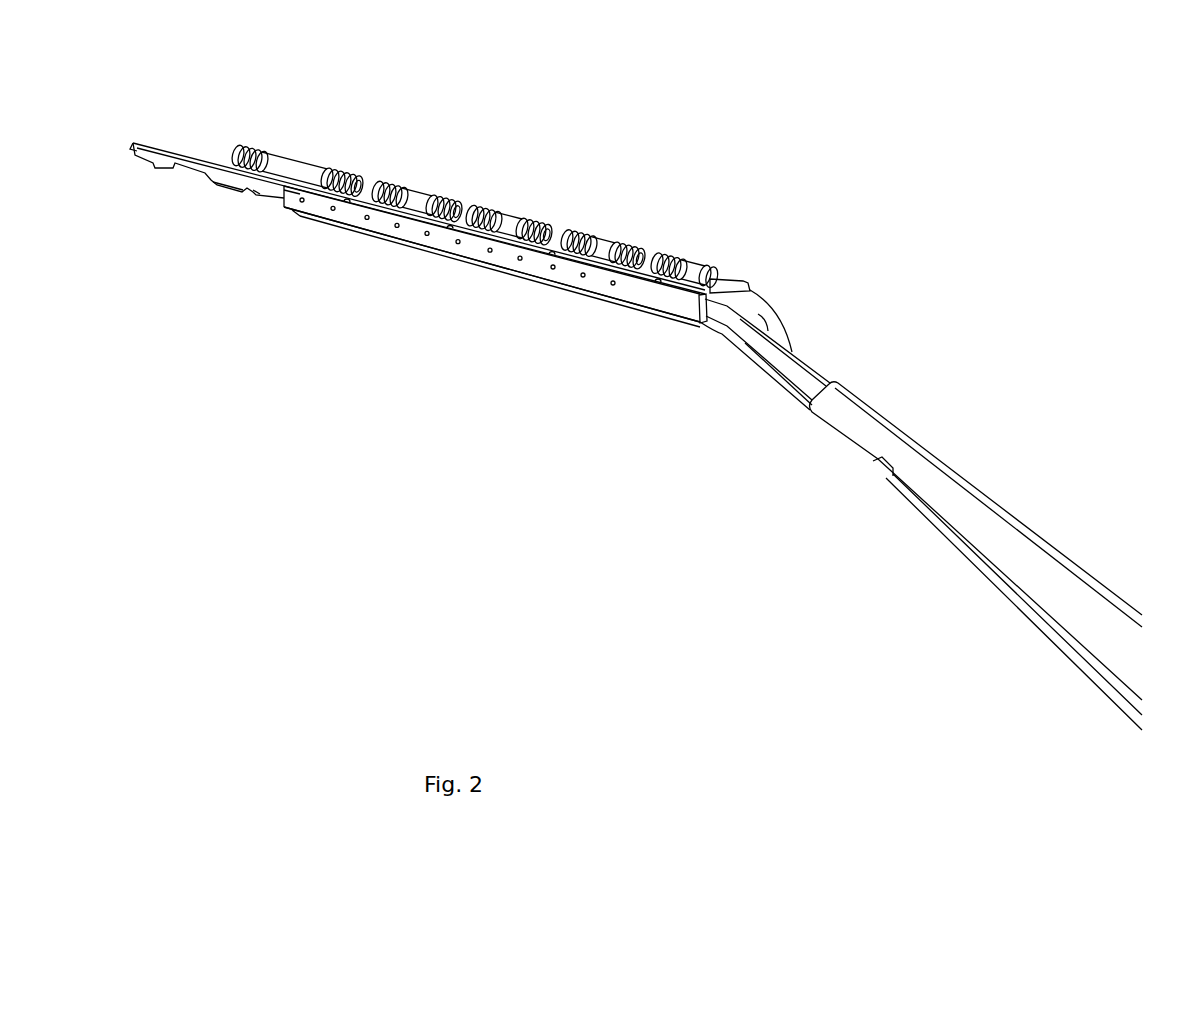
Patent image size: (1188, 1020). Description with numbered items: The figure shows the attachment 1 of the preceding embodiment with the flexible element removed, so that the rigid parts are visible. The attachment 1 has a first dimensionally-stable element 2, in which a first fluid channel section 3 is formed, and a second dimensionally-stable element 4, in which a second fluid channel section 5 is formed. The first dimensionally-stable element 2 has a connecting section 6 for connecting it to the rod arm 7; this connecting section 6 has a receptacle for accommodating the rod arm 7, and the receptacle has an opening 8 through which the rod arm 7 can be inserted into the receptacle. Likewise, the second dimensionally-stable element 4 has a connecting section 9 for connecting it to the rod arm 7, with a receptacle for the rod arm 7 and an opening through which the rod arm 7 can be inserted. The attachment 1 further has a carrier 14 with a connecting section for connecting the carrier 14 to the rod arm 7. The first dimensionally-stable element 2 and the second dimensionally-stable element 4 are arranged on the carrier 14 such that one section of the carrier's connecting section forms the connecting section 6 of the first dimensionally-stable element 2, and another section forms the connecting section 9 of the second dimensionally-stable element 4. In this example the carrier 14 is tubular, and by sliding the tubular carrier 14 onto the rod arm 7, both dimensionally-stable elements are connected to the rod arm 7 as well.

The attachment 1 is at (538, 74).
The first dimensionally-stable element 2 is at (304, 128).
The first fluid channel section 3 is at (300, 166).
The second dimensionally-stable element 4 is at (427, 154).
The second fluid channel section 5 is at (416, 197).
The connecting section 6 is at (292, 202).
The rod arm 7 is at (133, 142).
The opening 8 is at (277, 197).
The connecting section 9 is at (408, 232).
The carrier 14 is at (354, 228).